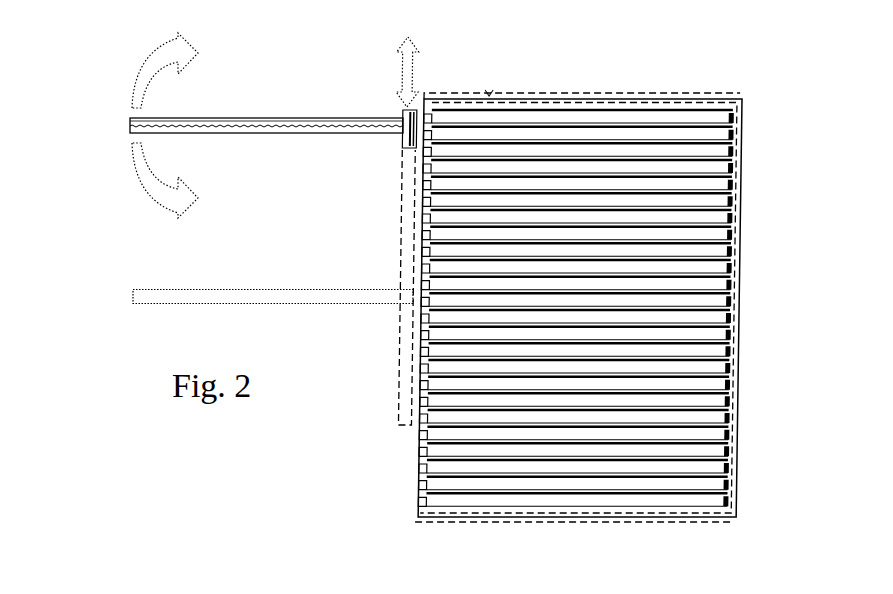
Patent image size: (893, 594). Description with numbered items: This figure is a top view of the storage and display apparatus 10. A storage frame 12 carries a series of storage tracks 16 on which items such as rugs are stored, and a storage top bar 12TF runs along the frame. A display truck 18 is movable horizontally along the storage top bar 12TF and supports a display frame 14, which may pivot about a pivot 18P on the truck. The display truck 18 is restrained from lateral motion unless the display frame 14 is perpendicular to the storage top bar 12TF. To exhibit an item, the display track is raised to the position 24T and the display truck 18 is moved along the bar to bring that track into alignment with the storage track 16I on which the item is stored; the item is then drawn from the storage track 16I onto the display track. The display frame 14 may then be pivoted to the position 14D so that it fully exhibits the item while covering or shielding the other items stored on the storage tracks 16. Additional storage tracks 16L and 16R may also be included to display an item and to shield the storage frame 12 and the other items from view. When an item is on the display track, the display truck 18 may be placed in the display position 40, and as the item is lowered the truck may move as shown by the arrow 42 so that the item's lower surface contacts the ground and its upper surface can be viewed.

The storage and display apparatus 10 is at (156, 266).
The storage frame 12 is at (740, 214).
The storage top bar 12TF is at (418, 521).
The display frame 14 is at (130, 126).
The position of display frame 14D is at (401, 425).
The storage tracks 16 is at (726, 158).
The storage track 16I is at (726, 301).
The additional storage track 16L is at (733, 98).
The additional storage track 16R is at (720, 523).
The display truck 18 is at (401, 108).
The pivot 18P is at (403, 141).
The raised position of display track 24T is at (137, 301).
The display position 40 is at (392, 117).
The arrow 42 is at (263, 136).